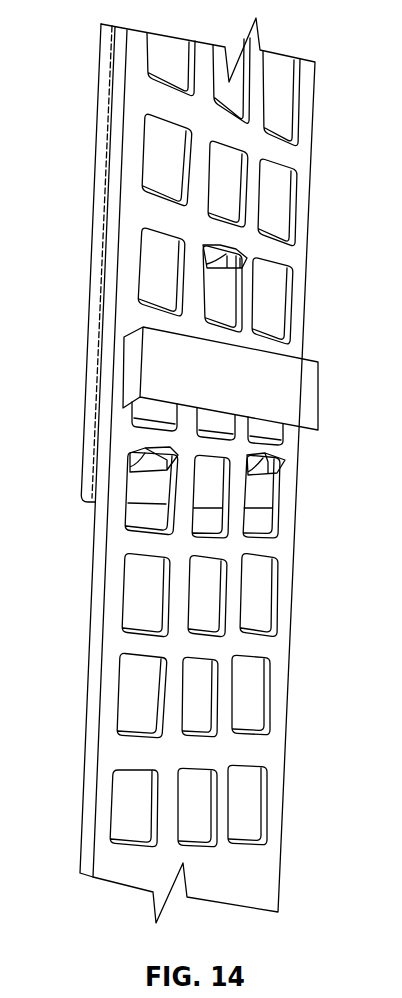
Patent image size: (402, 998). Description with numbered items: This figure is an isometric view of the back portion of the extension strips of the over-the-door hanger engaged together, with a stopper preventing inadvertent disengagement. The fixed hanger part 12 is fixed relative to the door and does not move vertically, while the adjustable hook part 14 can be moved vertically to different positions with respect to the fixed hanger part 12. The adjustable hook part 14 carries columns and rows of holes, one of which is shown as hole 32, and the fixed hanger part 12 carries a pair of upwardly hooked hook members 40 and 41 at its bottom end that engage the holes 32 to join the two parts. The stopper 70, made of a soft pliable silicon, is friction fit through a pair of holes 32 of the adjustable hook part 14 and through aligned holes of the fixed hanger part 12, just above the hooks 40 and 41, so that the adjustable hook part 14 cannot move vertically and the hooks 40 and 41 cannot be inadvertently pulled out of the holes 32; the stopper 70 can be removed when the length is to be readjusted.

The fixed hanger part 12 is at (93, 222).
The adjustable hook part 14 is at (90, 645).
The hole 32 is at (268, 683).
The hook member 40 is at (285, 465).
The hook member 41 is at (131, 455).
The stopper 70 is at (303, 390).